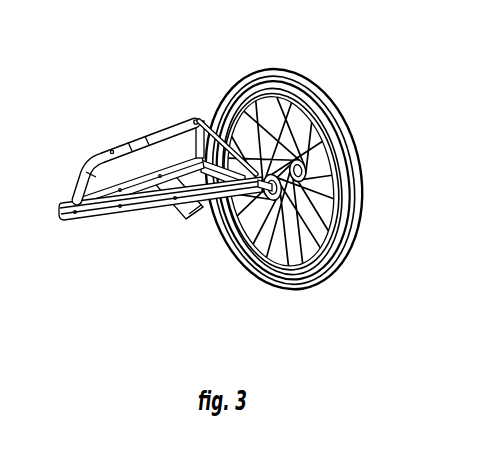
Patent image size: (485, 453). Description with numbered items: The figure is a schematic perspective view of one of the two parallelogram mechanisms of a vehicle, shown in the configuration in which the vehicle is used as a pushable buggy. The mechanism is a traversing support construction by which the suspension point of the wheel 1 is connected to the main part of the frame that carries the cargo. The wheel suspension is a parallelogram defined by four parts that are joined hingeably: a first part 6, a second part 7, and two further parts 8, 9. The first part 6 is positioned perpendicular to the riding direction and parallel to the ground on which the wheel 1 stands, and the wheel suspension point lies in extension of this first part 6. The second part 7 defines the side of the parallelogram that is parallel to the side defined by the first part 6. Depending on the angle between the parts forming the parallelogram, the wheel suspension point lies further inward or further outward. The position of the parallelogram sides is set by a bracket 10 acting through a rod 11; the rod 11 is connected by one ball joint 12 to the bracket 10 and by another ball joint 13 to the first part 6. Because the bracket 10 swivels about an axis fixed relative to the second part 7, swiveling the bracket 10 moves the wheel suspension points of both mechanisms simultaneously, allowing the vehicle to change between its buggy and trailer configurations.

The wheel 1 is at (285, 174).
The first part 6 is at (202, 217).
The second part 7 is at (110, 205).
The part of the parallelogram 8 is at (264, 92).
The part of the parallelogram 9 is at (167, 195).
The bracket 10 is at (168, 118).
The rod 11 is at (227, 125).
The ball joint 12 is at (255, 230).
The ball joint 13 is at (202, 117).